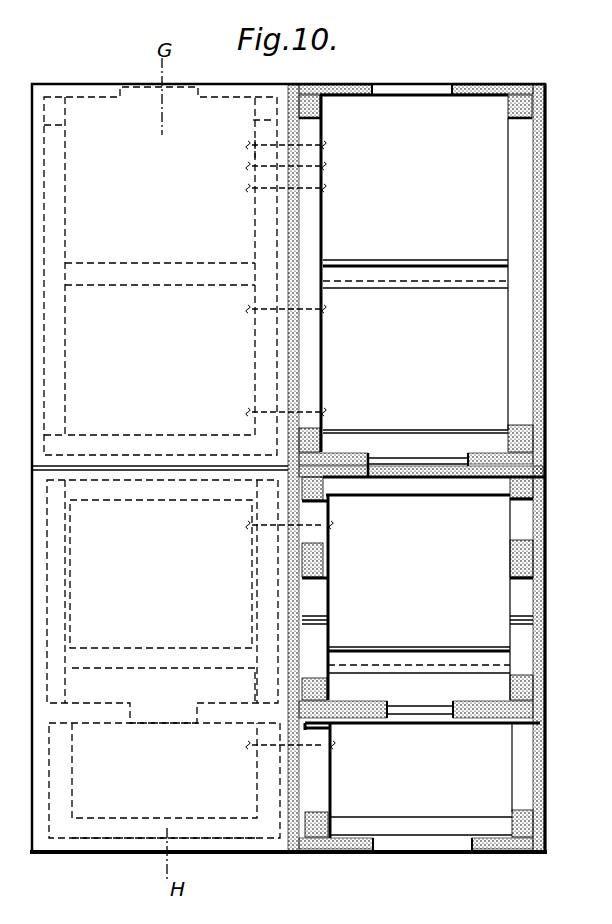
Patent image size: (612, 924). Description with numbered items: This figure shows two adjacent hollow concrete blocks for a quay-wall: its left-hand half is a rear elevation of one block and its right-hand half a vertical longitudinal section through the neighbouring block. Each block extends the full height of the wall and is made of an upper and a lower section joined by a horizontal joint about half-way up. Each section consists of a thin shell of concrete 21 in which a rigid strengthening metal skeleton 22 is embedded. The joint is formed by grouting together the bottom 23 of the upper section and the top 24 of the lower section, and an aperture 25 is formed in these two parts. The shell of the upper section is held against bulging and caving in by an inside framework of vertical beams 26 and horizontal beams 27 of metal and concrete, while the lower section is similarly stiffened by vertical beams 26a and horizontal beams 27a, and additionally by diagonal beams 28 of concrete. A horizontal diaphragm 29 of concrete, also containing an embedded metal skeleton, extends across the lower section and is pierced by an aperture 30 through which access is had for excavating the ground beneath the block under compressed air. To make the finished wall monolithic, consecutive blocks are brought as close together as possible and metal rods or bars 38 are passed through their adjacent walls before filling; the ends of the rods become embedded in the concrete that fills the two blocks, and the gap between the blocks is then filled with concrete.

The shell of concrete 21 is at (556, 211).
The strengthening metal skeleton 22 is at (546, 389).
The bottom of the upper section 23 is at (349, 462).
The top of the lower section 24 is at (347, 481).
The aperture 25 is at (415, 462).
The vertical beams 26 is at (313, 247).
The vertical beams 26a is at (325, 534).
The horizontal beams 27 is at (323, 114).
The horizontal beams 27a is at (418, 650).
The diagonal beams 28 is at (330, 580).
The horizontal diaphragm 29 is at (366, 714).
The aperture 30 is at (437, 718).
The metal rods or bars 38 is at (248, 166).